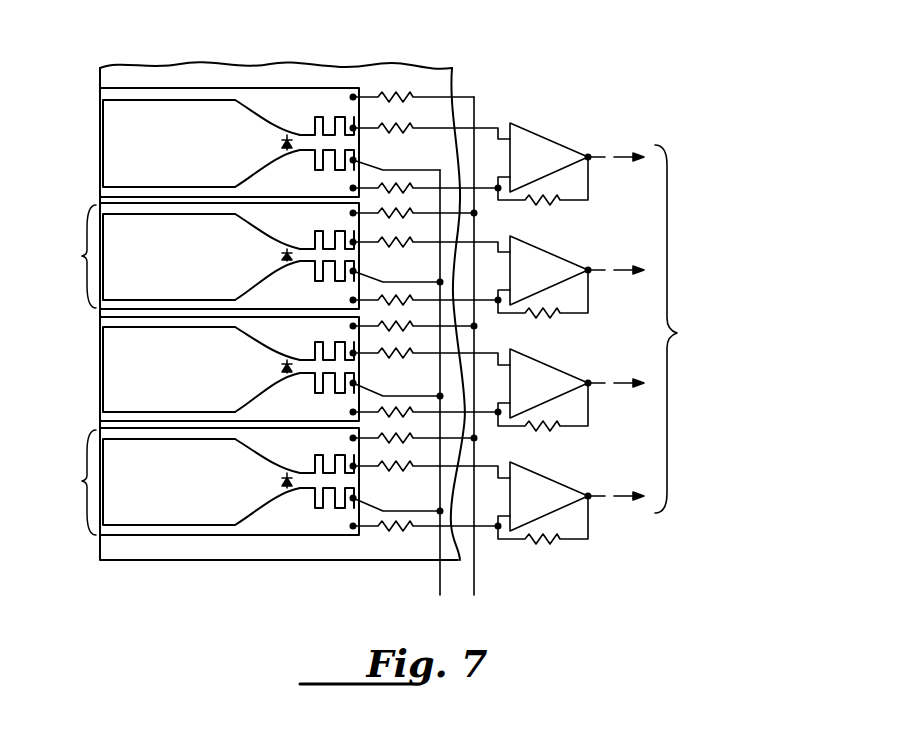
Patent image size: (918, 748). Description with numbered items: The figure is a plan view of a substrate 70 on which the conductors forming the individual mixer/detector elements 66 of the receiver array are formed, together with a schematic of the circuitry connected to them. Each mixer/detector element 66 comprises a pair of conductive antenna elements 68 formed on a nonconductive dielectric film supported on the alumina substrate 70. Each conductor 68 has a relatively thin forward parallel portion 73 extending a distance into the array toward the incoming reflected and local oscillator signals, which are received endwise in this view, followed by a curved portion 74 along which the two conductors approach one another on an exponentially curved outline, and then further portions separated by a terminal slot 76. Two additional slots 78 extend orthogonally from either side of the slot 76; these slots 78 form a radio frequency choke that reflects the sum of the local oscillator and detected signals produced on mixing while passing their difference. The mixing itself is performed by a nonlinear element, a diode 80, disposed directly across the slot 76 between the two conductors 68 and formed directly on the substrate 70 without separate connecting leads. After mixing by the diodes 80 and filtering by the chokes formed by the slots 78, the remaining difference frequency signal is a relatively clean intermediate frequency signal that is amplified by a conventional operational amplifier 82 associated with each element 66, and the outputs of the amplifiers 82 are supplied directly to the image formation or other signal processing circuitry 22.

The signal processing circuitry 22 is at (726, 329).
The mixer/detector element 66 is at (74, 370).
The conductive antenna element 68 is at (122, 101).
The substrate 70 is at (297, 561).
The parallel portion 73 is at (187, 88).
The curved portion 74 is at (262, 116).
The slot 76 is at (359, 144).
The additional slot 78 is at (323, 113).
The diode 80 is at (282, 145).
The operational amplifier 82 is at (545, 157).